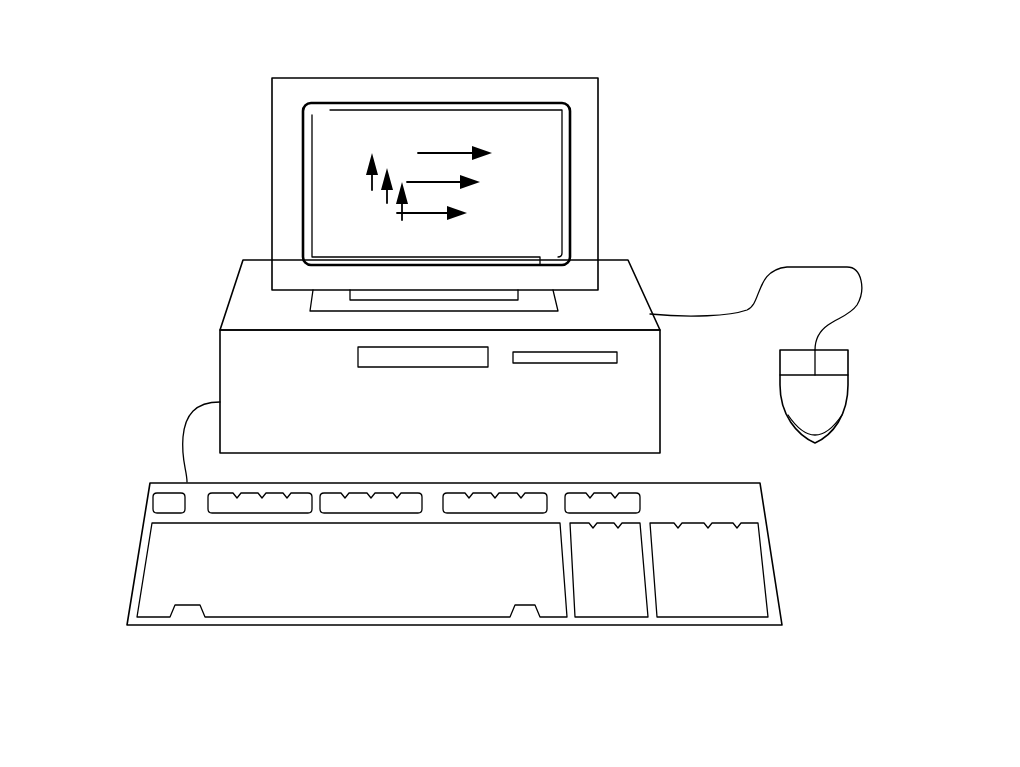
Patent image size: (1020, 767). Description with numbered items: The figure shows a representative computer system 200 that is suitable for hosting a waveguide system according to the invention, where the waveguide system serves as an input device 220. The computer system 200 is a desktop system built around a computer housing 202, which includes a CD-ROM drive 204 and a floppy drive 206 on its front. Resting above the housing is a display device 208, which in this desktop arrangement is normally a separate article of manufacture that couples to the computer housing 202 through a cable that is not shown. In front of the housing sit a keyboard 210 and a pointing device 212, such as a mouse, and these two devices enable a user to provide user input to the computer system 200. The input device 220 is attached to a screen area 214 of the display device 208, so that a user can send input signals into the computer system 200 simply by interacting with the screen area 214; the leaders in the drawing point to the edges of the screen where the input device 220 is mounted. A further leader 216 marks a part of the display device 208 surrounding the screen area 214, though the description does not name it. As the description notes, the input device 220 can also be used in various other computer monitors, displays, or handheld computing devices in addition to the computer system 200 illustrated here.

The computer system 200 is at (132, 157).
The computer housing 202 is at (250, 393).
The CD-ROM drive 204 is at (430, 367).
The floppy drive 206 is at (565, 363).
The display device 208 is at (598, 163).
The keyboard 210 is at (342, 625).
The pointing device 212 is at (843, 405).
The screen area 214 is at (337, 162).
The screen bezel 216 is at (290, 243).
The input device 220 is at (332, 88).